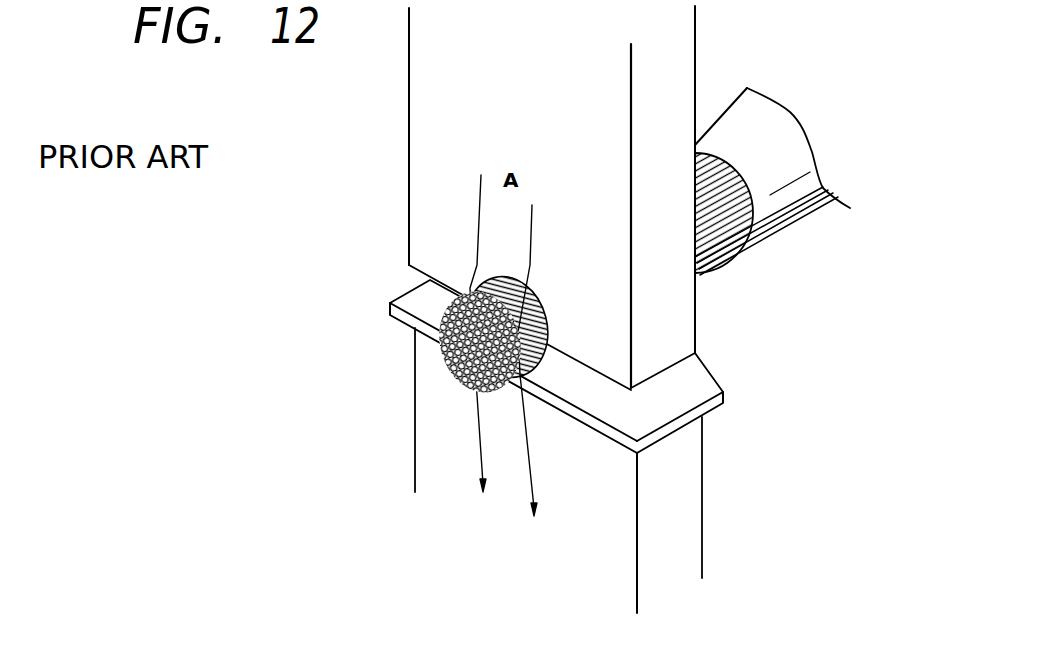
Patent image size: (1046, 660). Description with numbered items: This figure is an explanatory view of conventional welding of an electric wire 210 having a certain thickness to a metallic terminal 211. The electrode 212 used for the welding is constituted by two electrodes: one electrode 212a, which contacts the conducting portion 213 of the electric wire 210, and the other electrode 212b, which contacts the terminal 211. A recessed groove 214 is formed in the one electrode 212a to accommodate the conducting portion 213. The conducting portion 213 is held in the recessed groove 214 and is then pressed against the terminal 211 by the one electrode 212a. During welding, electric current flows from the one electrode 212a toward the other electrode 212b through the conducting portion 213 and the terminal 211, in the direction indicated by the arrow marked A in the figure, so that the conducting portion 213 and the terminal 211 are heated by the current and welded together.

The electric wire 210 is at (805, 197).
The metallic terminal 211 is at (712, 404).
The electrode 212 is at (327, 315).
The one electrode 212a is at (422, 222).
The other electrode 212b is at (423, 370).
The conducting portion 213 is at (730, 255).
The recessed groove 214 is at (548, 330).